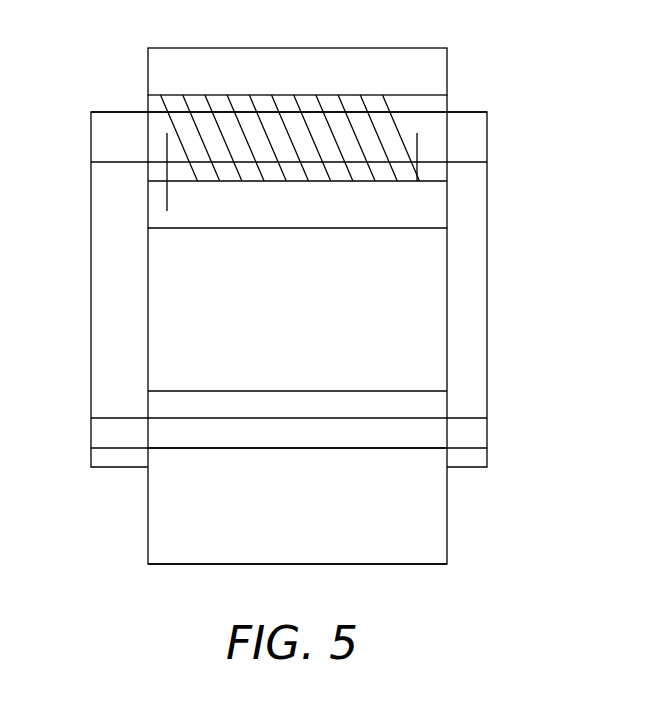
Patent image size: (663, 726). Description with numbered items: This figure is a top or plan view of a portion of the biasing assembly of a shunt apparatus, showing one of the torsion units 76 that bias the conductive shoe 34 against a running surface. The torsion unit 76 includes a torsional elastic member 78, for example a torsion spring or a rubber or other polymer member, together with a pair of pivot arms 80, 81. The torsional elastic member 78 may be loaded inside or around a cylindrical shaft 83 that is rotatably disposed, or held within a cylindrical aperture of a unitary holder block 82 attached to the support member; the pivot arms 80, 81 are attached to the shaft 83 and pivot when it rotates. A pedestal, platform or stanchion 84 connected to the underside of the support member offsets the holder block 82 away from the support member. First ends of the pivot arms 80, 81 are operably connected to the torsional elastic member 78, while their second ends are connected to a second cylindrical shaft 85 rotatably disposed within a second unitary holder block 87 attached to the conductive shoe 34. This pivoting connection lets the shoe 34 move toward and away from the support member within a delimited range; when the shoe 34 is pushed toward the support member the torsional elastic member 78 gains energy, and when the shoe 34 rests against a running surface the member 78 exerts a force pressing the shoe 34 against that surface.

The conductive shoe 34 is at (497, 549).
The torsion unit 76 is at (553, 147).
The torsional elastic member 78 is at (344, 101).
The pivot arm 80 is at (90, 289).
The pivot arm 81 is at (487, 263).
The unitary holder block 82 is at (147, 68).
The cylindrical shaft 83 is at (430, 112).
The pedestal 84 is at (240, 33).
The second cylindrical shaft 85 is at (429, 434).
The second unitary holder block 87 is at (448, 502).